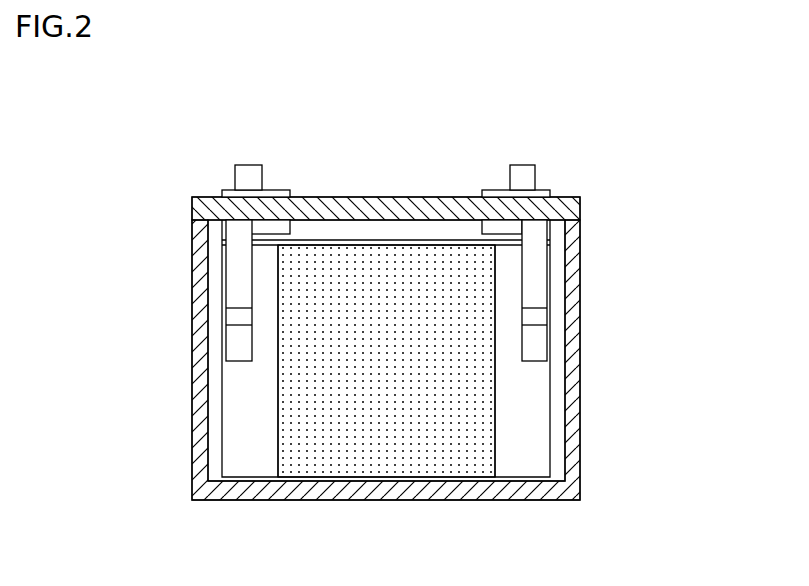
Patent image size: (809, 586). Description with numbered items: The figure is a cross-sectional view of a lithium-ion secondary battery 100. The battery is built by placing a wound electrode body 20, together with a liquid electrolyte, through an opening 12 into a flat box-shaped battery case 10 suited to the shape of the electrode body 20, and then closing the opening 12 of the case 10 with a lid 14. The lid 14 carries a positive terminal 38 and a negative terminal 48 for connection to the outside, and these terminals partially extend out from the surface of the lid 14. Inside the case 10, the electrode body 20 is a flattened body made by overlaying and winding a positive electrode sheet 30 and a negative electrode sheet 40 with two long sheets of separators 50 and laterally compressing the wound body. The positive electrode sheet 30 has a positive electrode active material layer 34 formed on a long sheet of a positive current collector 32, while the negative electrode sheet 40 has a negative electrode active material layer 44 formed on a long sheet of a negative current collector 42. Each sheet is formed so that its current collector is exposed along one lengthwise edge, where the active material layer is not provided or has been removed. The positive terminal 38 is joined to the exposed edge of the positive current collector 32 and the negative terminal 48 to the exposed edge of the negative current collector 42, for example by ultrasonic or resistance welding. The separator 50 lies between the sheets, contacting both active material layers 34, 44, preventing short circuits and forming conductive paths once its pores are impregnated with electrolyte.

The lithium-ion secondary battery 100 is at (162, 88).
The battery case 10 is at (584, 446).
The lid 14 is at (330, 195).
The opening 12 is at (363, 239).
The wound electrode body 20 is at (408, 240).
The positive electrode sheet 30 is at (267, 386).
The positive current collector 32 is at (252, 467).
The positive electrode active material layer 34 is at (335, 445).
The positive terminal 38 is at (247, 173).
The negative electrode sheet 40 is at (527, 385).
The negative current collector 42 is at (518, 468).
The negative electrode active material layer 44 is at (468, 445).
The negative terminal 48 is at (523, 167).
The separator 50 is at (398, 462).